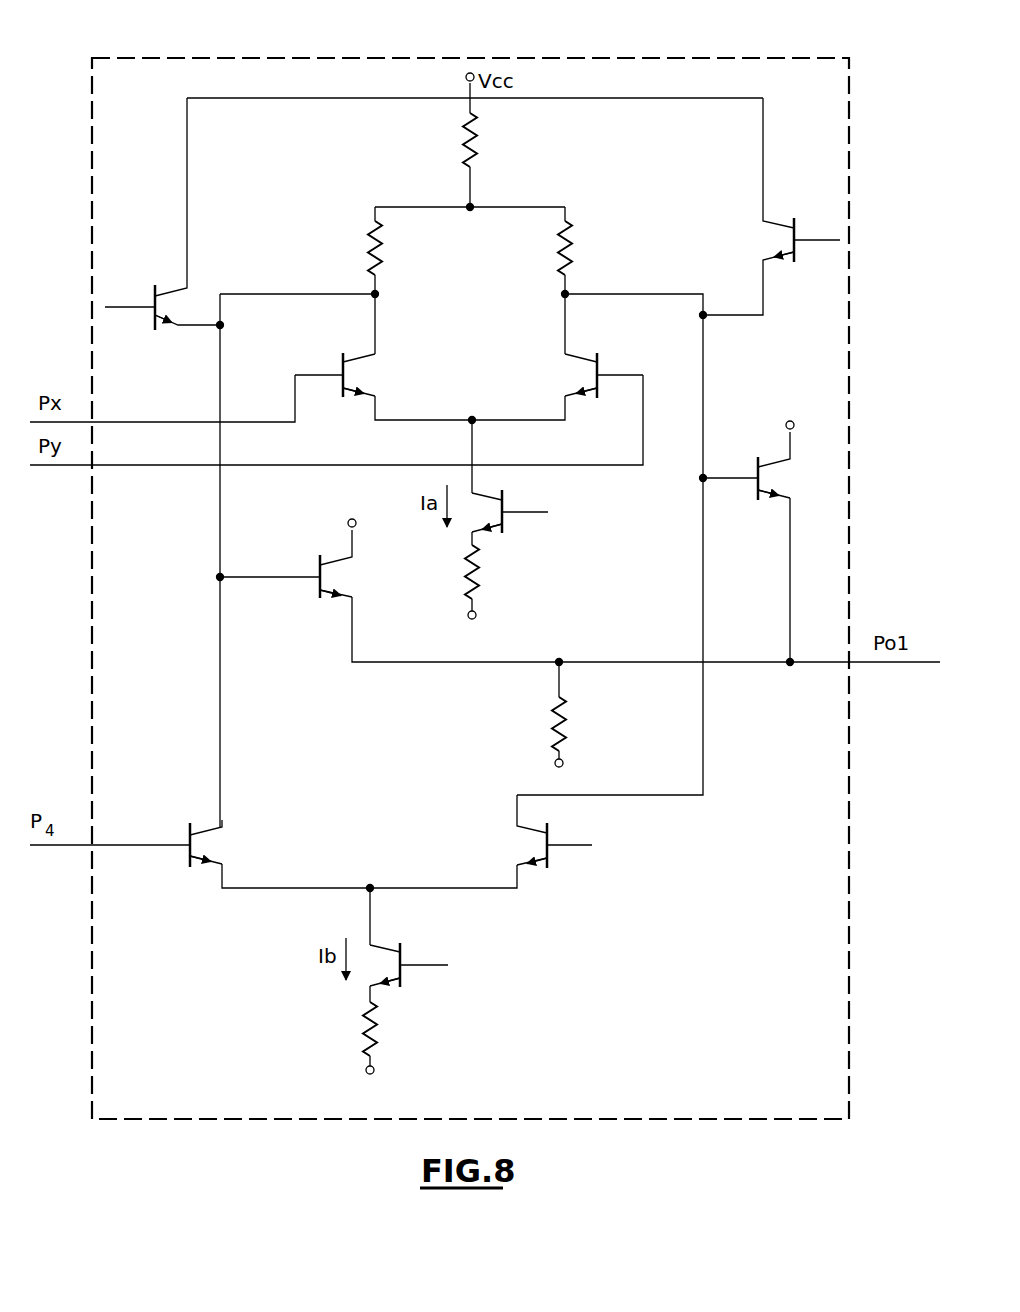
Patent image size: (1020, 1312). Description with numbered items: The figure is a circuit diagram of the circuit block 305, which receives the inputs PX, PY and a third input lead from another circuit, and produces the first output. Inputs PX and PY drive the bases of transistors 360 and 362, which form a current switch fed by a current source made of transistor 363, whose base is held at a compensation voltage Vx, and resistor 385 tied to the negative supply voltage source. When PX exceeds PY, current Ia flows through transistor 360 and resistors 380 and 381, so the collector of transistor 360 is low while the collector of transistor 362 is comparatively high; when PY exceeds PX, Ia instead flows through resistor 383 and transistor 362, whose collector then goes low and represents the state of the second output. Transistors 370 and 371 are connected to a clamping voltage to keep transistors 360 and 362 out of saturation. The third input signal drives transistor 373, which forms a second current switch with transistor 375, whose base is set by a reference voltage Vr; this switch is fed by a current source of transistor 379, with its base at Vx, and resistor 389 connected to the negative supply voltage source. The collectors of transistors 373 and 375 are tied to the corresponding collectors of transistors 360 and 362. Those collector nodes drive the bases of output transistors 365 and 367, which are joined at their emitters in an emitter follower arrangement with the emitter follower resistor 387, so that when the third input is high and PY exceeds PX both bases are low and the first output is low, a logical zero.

The circuit block 305 is at (712, 58).
The resistor 380 is at (480, 142).
The resistor 381 is at (383, 248).
The resistor 383 is at (560, 249).
The resistor 385 is at (482, 590).
The emitter follower resistor 387 is at (568, 742).
The resistor 389 is at (380, 1045).
The transistor 370 is at (165, 296).
The transistor 371 is at (775, 226).
The transistor 360 is at (365, 365).
The transistor 362 is at (575, 365).
The transistor 363 is at (510, 532).
The output transistor 365 is at (340, 567).
The output transistor 367 is at (776, 470).
The transistor 373 is at (215, 833).
The transistor 375 is at (527, 832).
The transistor 379 is at (384, 950).